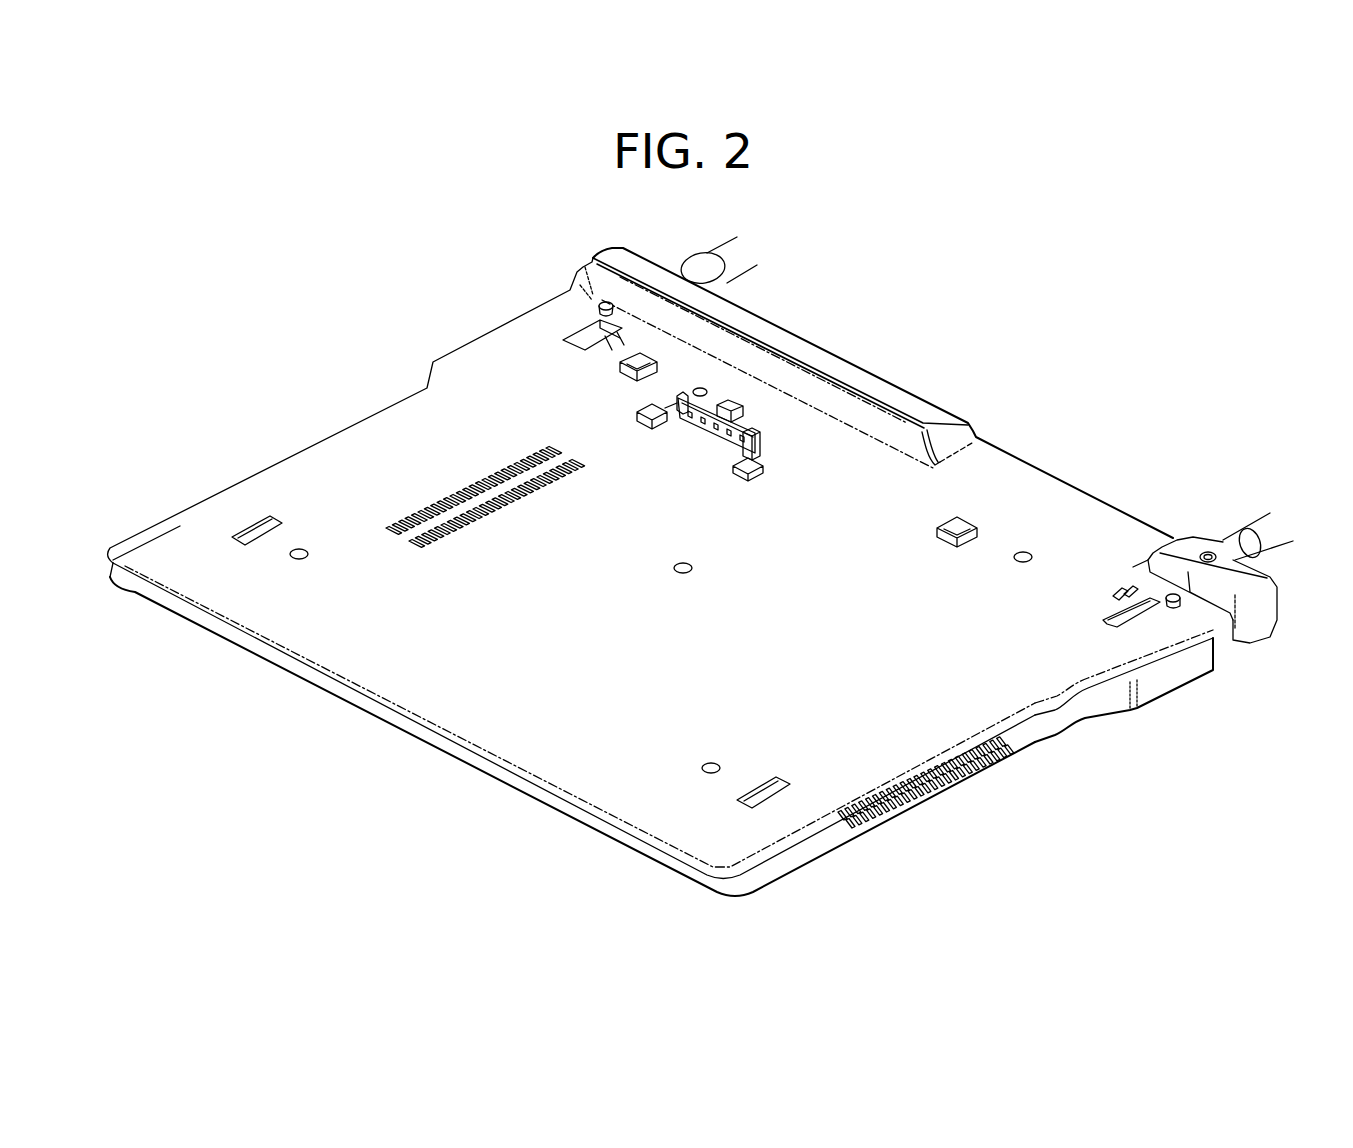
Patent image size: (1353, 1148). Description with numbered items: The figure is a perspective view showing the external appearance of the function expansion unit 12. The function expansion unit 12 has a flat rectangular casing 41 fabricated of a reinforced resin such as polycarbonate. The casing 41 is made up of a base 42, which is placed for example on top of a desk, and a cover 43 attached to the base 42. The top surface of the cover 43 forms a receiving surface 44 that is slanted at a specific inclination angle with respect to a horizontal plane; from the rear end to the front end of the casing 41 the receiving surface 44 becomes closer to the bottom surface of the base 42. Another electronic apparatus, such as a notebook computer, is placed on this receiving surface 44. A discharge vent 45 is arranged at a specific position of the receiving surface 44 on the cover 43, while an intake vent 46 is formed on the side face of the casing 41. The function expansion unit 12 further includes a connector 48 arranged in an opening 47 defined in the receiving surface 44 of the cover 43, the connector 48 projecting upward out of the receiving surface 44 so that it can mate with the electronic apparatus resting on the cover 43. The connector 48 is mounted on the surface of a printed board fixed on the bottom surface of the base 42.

The function expansion unit 12 is at (301, 362).
The casing 41 is at (182, 492).
The base 42 is at (272, 655).
The cover 43 is at (257, 612).
The receiving surface 44 is at (594, 648).
The discharge vent 45 is at (508, 505).
The intake vent 46 is at (947, 790).
The opening 47 is at (762, 452).
The connector 48 is at (743, 420).